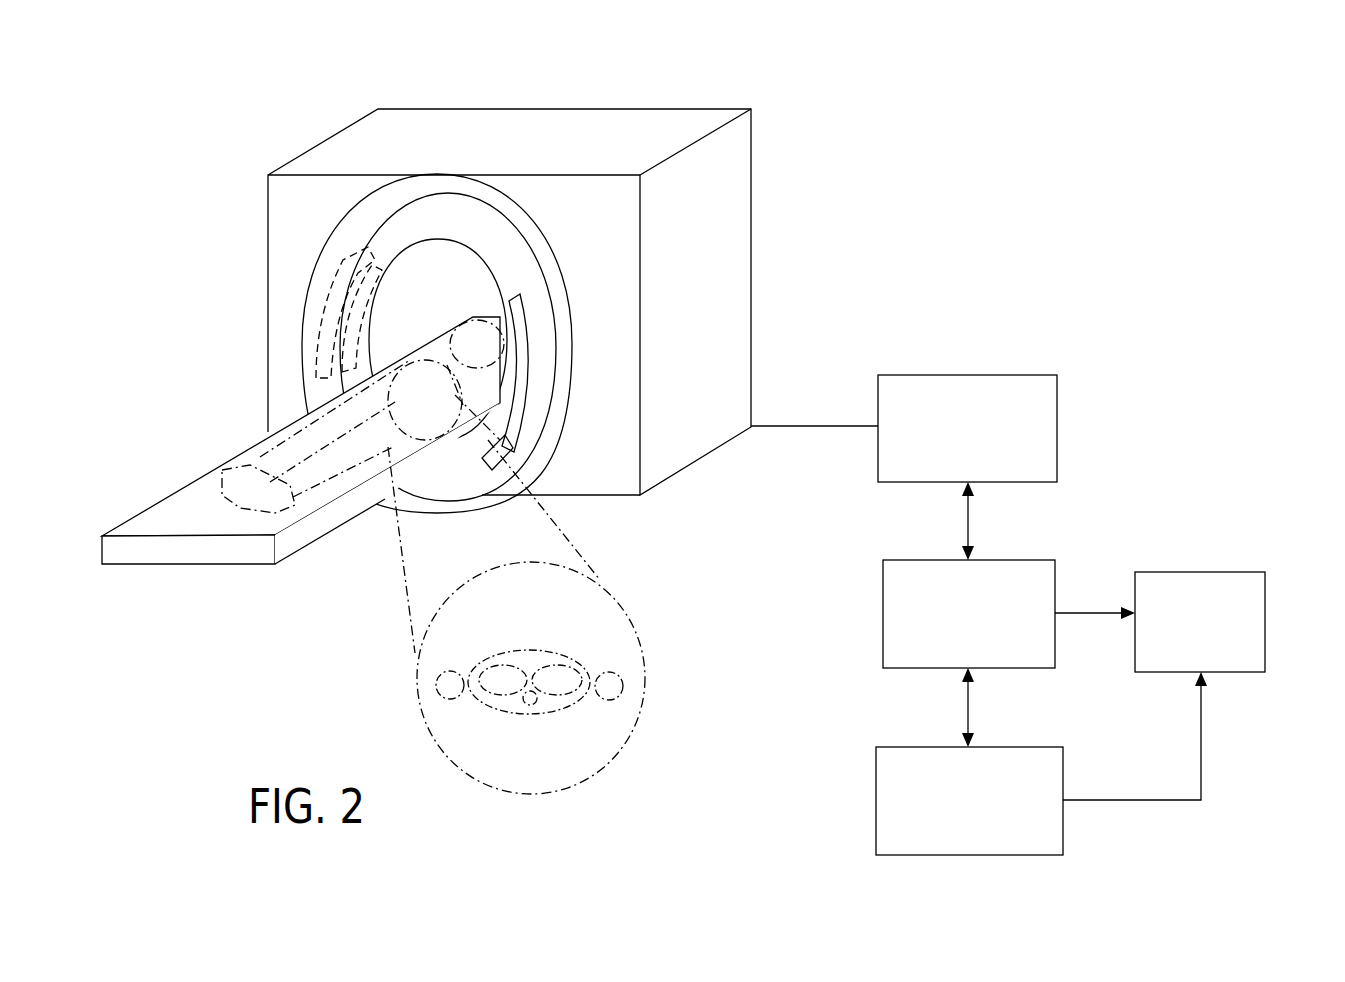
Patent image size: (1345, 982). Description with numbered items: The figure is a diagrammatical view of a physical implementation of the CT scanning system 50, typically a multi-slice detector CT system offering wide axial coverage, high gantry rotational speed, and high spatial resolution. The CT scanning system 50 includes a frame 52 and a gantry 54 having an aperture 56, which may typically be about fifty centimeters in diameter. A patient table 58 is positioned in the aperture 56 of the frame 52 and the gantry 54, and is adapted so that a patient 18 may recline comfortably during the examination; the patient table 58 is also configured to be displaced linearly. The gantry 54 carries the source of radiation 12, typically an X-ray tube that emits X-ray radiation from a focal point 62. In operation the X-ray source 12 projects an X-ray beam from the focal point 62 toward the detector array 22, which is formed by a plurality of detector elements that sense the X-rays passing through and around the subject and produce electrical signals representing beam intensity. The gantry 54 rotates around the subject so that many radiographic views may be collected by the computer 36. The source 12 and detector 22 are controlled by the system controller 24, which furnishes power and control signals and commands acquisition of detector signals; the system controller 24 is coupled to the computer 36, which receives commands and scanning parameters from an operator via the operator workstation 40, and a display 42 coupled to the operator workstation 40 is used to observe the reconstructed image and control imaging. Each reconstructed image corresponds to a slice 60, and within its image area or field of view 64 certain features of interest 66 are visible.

The CT scanning system 50 is at (726, 71).
The frame 52 is at (738, 220).
The gantry 54 is at (413, 208).
The aperture 56 is at (442, 285).
The focal point 62 is at (343, 331).
The source of X-ray radiation 12 is at (318, 358).
The detector array 22 is at (527, 367).
The patient table 58 is at (301, 485).
The patient 18 is at (263, 463).
The slice 60 is at (427, 430).
The field of view 64 is at (568, 678).
The features of interest 66 is at (550, 657).
The system controller 24 is at (1060, 428).
The computer 36 is at (883, 588).
The display 42 is at (1267, 602).
The operator workstation 40 is at (876, 787).